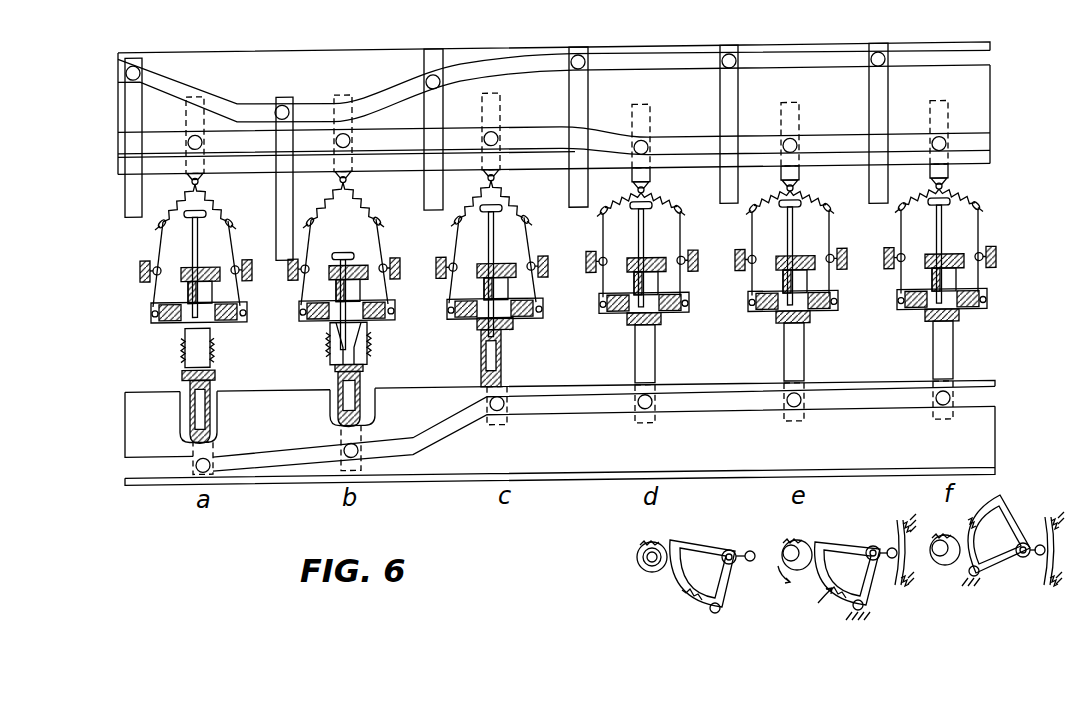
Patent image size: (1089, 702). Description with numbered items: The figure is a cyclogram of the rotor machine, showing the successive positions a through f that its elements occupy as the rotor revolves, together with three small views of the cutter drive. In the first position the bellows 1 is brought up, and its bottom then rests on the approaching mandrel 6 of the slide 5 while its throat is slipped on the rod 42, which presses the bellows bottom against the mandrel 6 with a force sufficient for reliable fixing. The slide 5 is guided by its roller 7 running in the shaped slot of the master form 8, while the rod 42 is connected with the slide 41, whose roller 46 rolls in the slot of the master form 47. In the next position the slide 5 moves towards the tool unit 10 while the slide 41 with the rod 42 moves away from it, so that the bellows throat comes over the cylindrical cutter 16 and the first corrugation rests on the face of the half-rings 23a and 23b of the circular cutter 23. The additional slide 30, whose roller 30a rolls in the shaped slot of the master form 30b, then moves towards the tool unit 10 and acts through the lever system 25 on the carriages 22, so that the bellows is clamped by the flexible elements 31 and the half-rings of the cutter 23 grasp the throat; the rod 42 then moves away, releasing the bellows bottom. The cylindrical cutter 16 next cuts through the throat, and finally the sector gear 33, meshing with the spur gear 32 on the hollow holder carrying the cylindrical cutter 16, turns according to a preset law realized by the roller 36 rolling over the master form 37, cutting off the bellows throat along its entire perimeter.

The bellows 1 is at (208, 339).
The slide 5 is at (190, 424).
The mandrel 6 is at (215, 372).
The roller 7 is at (217, 453).
The master form 8 is at (128, 460).
The tool unit 10 is at (163, 316).
The cylindrical cutter 16 is at (192, 291).
The carriage 22 is at (688, 300).
The cutter 23 is at (612, 311).
The half-ring 23a is at (458, 295).
The half-ring 23b is at (533, 296).
The lever system 25 is at (676, 209).
The additional slide 30 is at (651, 175).
The roller 30a is at (645, 147).
The master form 30b is at (600, 146).
The flexible element 31 is at (668, 325).
The spur gear 32 is at (810, 540).
The sector gear 33 is at (708, 550).
The roller 36 is at (1036, 555).
The master form 37 is at (1045, 520).
The slide 41 is at (133, 193).
The rod 42 is at (197, 253).
The roller 46 is at (284, 104).
The master form 47 is at (243, 108).